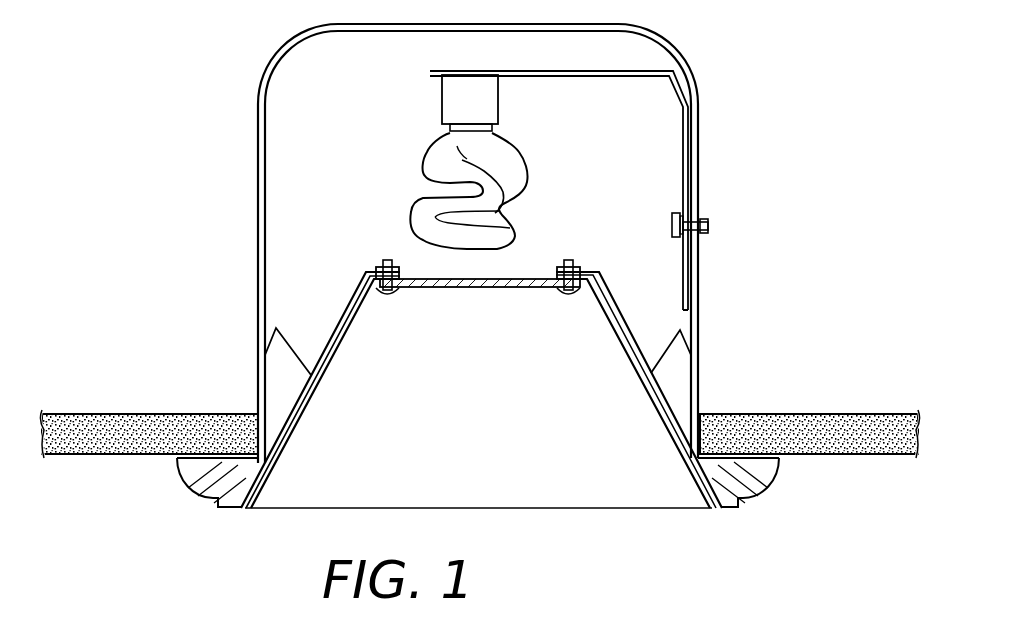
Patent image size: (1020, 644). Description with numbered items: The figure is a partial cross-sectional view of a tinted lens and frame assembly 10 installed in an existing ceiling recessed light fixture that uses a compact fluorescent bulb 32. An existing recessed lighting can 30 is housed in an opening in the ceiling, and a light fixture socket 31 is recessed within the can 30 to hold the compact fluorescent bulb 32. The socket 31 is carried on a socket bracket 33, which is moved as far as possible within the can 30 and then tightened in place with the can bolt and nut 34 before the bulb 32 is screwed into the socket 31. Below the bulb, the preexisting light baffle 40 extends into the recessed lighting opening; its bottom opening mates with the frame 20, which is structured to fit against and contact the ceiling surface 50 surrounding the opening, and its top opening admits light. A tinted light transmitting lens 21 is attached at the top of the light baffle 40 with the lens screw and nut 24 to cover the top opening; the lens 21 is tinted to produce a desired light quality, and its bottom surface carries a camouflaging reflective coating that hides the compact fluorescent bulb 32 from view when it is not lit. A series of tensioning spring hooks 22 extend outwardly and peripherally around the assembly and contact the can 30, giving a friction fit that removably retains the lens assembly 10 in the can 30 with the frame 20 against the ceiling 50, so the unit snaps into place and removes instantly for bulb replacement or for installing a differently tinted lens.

The tinted lens and frame assembly 10 is at (156, 496).
The frame 20 is at (775, 468).
The tinted light transmitting lens 21 is at (442, 292).
The tensioning spring hooks 22 is at (293, 343).
The lens screw and nut 24 is at (577, 297).
The recessed lighting can 30 is at (257, 135).
The light fixture socket 31 is at (500, 88).
The compact fluorescent bulb 32 is at (430, 180).
The socket bracket 33 is at (622, 75).
The can bolt and nut 34 is at (675, 237).
The light baffle 40 is at (682, 453).
The ceiling surface 50 is at (185, 413).